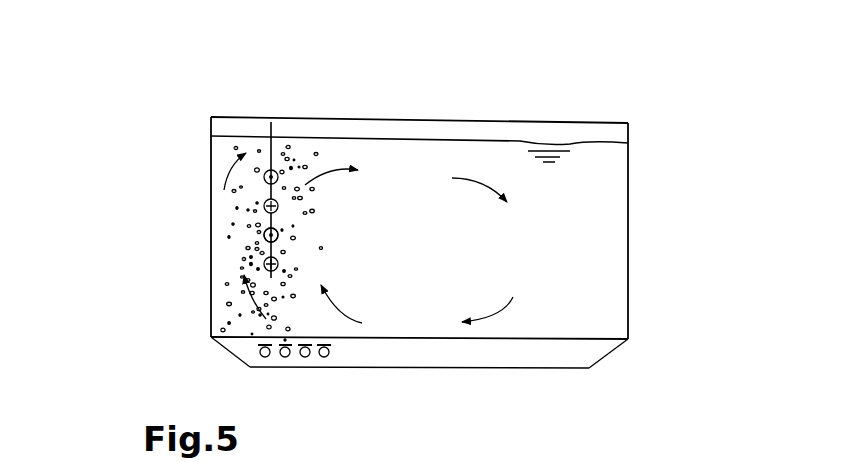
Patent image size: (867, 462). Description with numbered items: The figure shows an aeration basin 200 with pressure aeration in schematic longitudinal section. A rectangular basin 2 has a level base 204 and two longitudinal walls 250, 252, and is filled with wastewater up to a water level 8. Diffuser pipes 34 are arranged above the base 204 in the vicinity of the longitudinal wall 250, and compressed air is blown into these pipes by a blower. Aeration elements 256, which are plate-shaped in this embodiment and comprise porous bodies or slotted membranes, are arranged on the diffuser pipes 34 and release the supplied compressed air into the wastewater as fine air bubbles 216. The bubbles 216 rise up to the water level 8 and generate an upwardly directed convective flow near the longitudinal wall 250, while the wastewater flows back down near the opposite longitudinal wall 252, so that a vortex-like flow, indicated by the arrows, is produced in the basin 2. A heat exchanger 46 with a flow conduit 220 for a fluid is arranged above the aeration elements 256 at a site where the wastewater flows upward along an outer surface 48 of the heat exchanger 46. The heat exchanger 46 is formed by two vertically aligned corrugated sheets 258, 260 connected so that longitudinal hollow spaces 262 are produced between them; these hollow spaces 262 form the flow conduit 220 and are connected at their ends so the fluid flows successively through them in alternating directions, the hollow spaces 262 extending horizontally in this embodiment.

The aeration basin 200 is at (422, 100).
The rectangular basin 2 is at (618, 345).
The water level 8 is at (481, 138).
The longitudinal wall 252 is at (628, 265).
The longitudinal wall 250 is at (210, 208).
The level base 204 is at (508, 370).
The aeration elements 256 is at (257, 344).
The diffuser pipes 34 is at (310, 358).
The flow conduit 220 is at (271, 135).
The heat exchanger 46 is at (275, 199).
The outer surface 48 is at (265, 201).
The longitudinal hollow spaces 262 is at (264, 204).
The corrugated sheet 258 is at (264, 237).
The corrugated sheet 260 is at (279, 260).
The fine air bubbles 216 is at (226, 321).